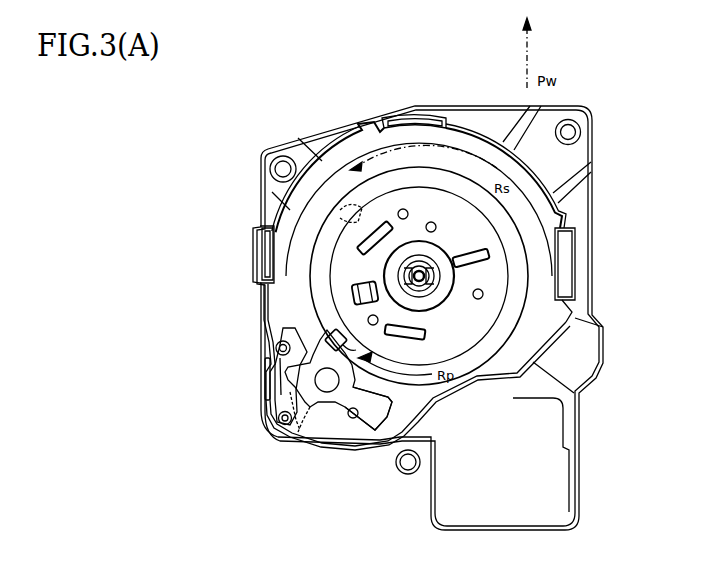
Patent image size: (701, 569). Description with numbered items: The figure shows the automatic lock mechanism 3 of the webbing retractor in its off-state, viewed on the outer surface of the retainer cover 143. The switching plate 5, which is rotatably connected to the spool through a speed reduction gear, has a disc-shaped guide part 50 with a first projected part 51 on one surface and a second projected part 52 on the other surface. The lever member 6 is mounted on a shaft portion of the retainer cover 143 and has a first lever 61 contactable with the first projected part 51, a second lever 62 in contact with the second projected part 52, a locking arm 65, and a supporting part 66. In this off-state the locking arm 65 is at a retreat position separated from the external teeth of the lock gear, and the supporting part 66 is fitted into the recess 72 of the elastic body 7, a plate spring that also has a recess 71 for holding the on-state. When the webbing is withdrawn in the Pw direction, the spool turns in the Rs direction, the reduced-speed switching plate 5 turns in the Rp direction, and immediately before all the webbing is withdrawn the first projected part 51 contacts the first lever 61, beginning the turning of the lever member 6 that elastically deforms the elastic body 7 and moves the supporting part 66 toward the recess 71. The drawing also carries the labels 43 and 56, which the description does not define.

The automatic lock mechanism 3 is at (247, 342).
The switching plate 5 is at (312, 245).
The lever member 6 is at (320, 404).
The elastic body 7 is at (286, 402).
The engagement projection 43 is at (366, 287).
The guide part 50 is at (312, 305).
The first projected part 51 is at (352, 349).
The second projected part 52 is at (348, 210).
The disc face 56 is at (462, 327).
The first lever 61 is at (326, 338).
The second lever 62 is at (354, 389).
The locking arm 65 is at (352, 426).
The supporting part 66 is at (294, 382).
The recess 71 is at (286, 392).
The recess 72 is at (264, 367).
The retainer cover 143 is at (597, 208).